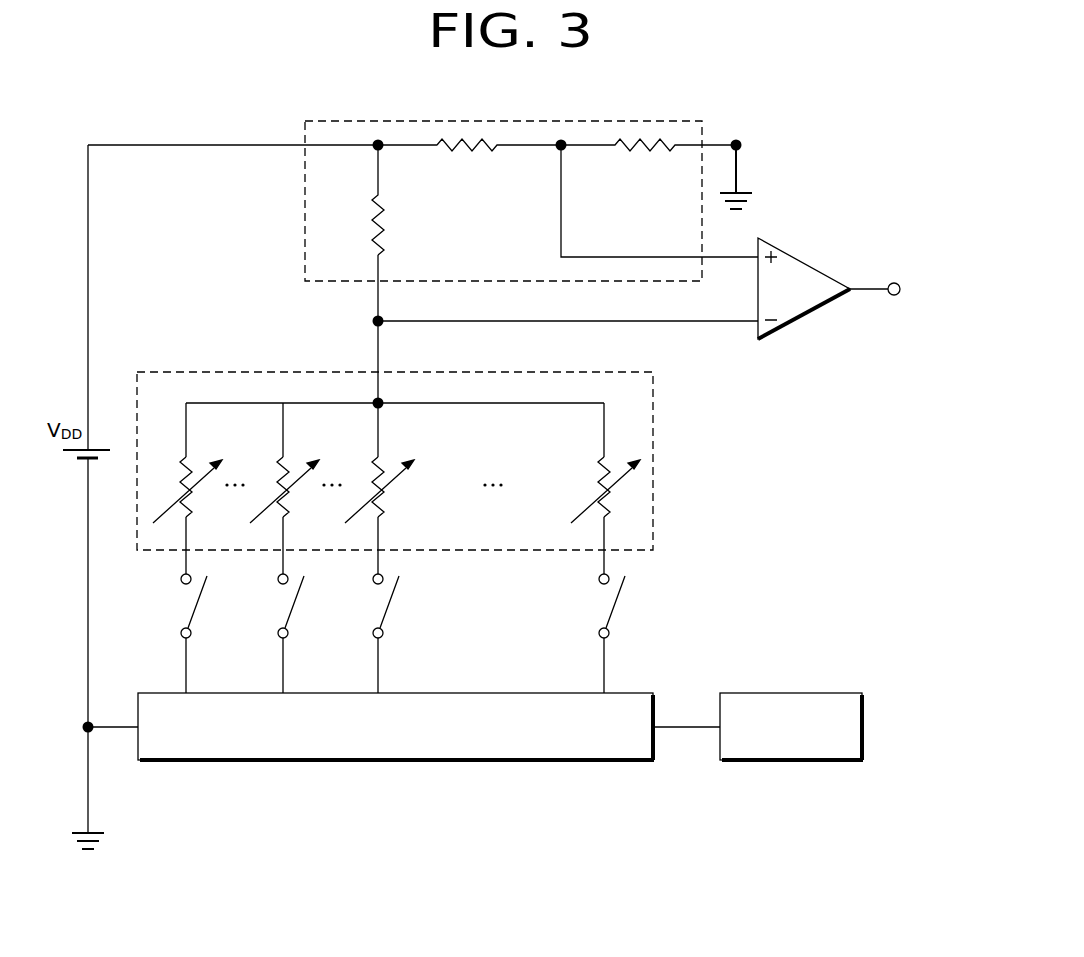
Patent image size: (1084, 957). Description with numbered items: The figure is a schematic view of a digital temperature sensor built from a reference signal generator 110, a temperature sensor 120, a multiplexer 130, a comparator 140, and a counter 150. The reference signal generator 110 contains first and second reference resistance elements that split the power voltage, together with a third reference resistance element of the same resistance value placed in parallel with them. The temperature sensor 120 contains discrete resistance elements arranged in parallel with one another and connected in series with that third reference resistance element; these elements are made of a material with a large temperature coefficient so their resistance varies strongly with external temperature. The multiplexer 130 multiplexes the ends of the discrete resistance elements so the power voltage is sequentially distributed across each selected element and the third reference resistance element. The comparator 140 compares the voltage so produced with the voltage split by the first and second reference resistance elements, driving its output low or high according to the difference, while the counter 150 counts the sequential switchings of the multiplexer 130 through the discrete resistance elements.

The reference signal generator 110 is at (305, 215).
The temperature sensor 120 is at (655, 462).
The multiplexer 130 is at (400, 761).
The comparator 140 is at (808, 318).
The counter 150 is at (792, 761).